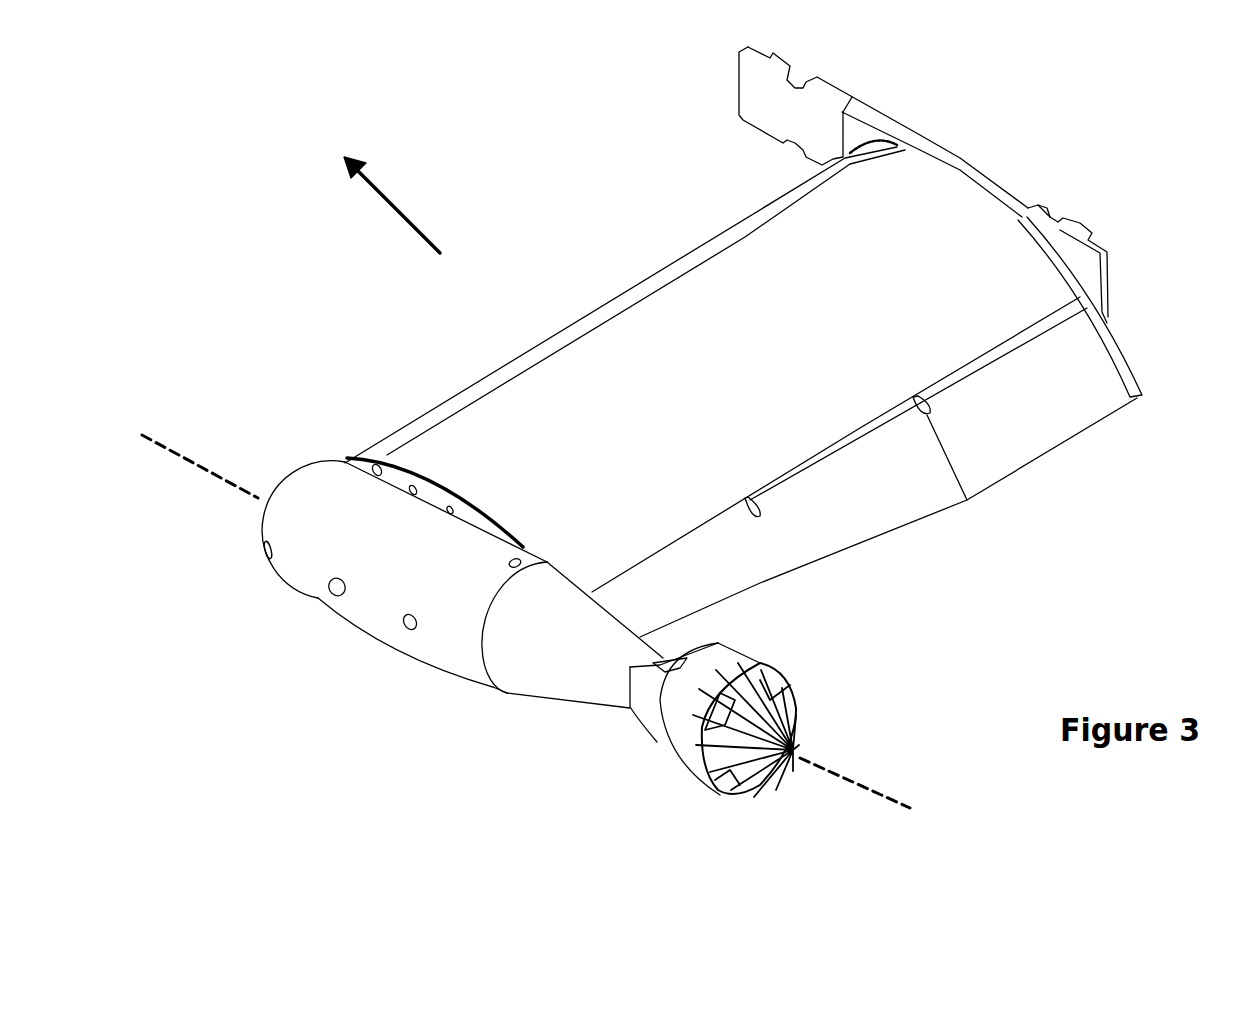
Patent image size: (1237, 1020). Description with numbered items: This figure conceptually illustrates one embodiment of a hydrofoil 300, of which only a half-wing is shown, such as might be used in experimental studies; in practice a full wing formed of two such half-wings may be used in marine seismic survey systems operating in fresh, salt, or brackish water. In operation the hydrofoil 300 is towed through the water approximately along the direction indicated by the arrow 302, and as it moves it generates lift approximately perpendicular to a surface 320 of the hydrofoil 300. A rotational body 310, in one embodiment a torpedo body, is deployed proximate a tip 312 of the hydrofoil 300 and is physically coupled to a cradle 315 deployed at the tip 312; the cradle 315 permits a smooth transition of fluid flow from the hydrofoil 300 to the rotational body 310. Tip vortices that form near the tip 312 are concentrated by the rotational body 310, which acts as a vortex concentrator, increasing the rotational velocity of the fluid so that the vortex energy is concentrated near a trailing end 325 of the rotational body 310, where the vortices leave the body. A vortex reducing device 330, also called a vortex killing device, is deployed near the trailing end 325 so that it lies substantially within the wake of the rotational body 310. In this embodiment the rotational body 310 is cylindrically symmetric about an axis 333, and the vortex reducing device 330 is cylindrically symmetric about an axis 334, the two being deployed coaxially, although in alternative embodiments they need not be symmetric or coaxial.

The hydrofoil 300 is at (538, 213).
The arrow 302 is at (392, 210).
The rotational body 310 is at (443, 663).
The tip 312 is at (348, 445).
The cradle 315 is at (418, 467).
The surface 320 is at (746, 312).
The trailing end 325 is at (635, 716).
The vortex reducing device 330 is at (757, 657).
The axis 333 is at (232, 483).
The axis 334 is at (843, 777).